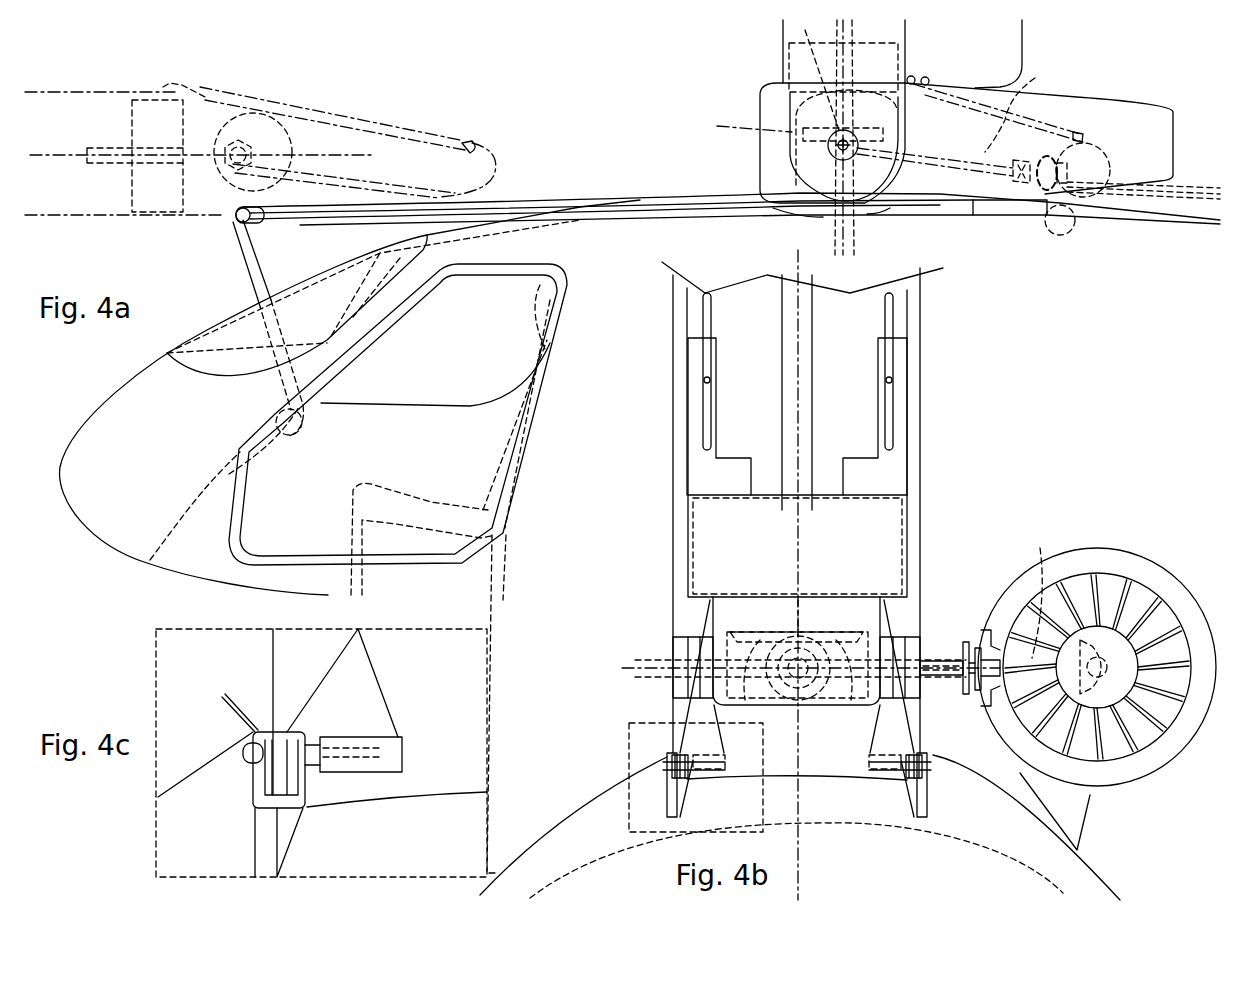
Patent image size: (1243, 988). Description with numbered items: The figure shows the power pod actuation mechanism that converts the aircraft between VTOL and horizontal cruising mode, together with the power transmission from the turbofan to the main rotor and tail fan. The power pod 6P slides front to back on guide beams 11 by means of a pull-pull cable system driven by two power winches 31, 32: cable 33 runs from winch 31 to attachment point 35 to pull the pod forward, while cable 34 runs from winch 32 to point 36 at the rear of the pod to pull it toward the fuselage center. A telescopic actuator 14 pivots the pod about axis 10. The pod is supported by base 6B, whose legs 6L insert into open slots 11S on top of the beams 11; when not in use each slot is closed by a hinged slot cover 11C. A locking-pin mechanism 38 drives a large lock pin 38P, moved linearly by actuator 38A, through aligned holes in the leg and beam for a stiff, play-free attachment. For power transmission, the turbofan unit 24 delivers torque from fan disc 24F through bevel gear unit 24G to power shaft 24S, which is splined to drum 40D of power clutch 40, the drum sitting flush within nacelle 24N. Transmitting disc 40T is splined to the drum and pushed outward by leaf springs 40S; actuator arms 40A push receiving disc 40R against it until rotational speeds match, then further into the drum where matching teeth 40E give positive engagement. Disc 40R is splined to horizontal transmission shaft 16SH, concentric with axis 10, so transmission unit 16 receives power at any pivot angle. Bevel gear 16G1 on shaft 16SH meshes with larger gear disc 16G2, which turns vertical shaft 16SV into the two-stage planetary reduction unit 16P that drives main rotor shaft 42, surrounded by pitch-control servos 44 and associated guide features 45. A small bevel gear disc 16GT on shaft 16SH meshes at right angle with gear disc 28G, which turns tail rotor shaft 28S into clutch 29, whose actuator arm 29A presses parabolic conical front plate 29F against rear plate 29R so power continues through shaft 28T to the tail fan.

In FIG. 4a, the power pod 6P is at (758, 52).
In FIG. 4c, the leg 6L is at (273, 710).
In FIG. 4a, the base 6B is at (1107, 150).
In FIG. 4a, the axis 10 is at (408, 149).
In FIG. 4a, the guide beam 11 is at (520, 210).
In FIG. 4b, the guide beam 11 is at (705, 777).
In FIG. 4c, the guide beam 11 is at (315, 800).
In FIG. 4c, the slot cover 11C is at (228, 712).
In FIG. 4c, the open slot 11S is at (297, 730).
In FIG. 4a, the telescopic actuator 14 is at (1035, 78).
In FIG. 4b, the transmission unit 16 is at (648, 594).
In FIG. 4b, the two-stage planetary gear reduction unit 16P is at (698, 543).
In FIG. 4b, the vertical shaft 16SV is at (787, 620).
In FIG. 4b, the horizontal transmission shaft 16SH is at (792, 678).
In FIG. 4b, the bevel gear 16G1 is at (862, 700).
In FIG. 4b, the gear disc 16G2 is at (847, 627).
In FIG. 4b, the bevel gear disc 16GT is at (748, 690).
In FIG. 4a, the turbofan unit 24 is at (1077, 97).
In FIG. 4b, the turbofan unit 24 is at (1113, 537).
In FIG. 4b, the turbofan nacelle 24N is at (1078, 549).
In FIG. 4b, the power shaft 24S is at (1033, 592).
In FIG. 4b, the fan disc 24F is at (1101, 646).
In FIG. 4b, the bevel gear unit 24G is at (1110, 654).
In FIG. 4a, the tail rotor shaft 28S is at (900, 160).
In FIG. 4a, the shaft 28T is at (728, 219).
In FIG. 4b, the gear disc 28G is at (796, 662).
In FIG. 4a, the clutch 29 is at (1076, 155).
In FIG. 4a, the actuator arm 29A is at (1020, 165).
In FIG. 4a, the front plate 29F is at (1042, 160).
In FIG. 4a, the rear plate 29R is at (1068, 170).
In FIG. 4a, the power winch 31 is at (275, 421).
In FIG. 4a, the power winch 32 is at (1073, 233).
In FIG. 4a, the cable 33 is at (252, 268).
In FIG. 4a, the cable 34 is at (940, 215).
In FIG. 4a, the attachment point 35 is at (807, 208).
In FIG. 4a, the attachment point 36 is at (870, 208).
In FIG. 4c, the locking-pin mechanism 38 is at (320, 780).
In FIG. 4c, the lock pin 38P is at (248, 765).
In FIG. 4c, the actuator 38A is at (402, 757).
In FIG. 4b, the power clutch 40 is at (966, 617).
In FIG. 4b, the matching teeth 40E is at (984, 630).
In FIG. 4b, the transmitting disc 40T is at (966, 642).
In FIG. 4b, the receiving disc 40R is at (975, 654).
In FIG. 4b, the actuator arms 40A is at (935, 677).
In FIG. 4b, the leaf spring 40S is at (985, 697).
In FIG. 4b, the drum 40D is at (992, 708).
In FIG. 4b, the main rotor shaft 42 is at (781, 330).
In FIG. 4b, the pitch-control servos 44 is at (897, 412).
In FIG. 4b, the guide slot 45 is at (890, 315).